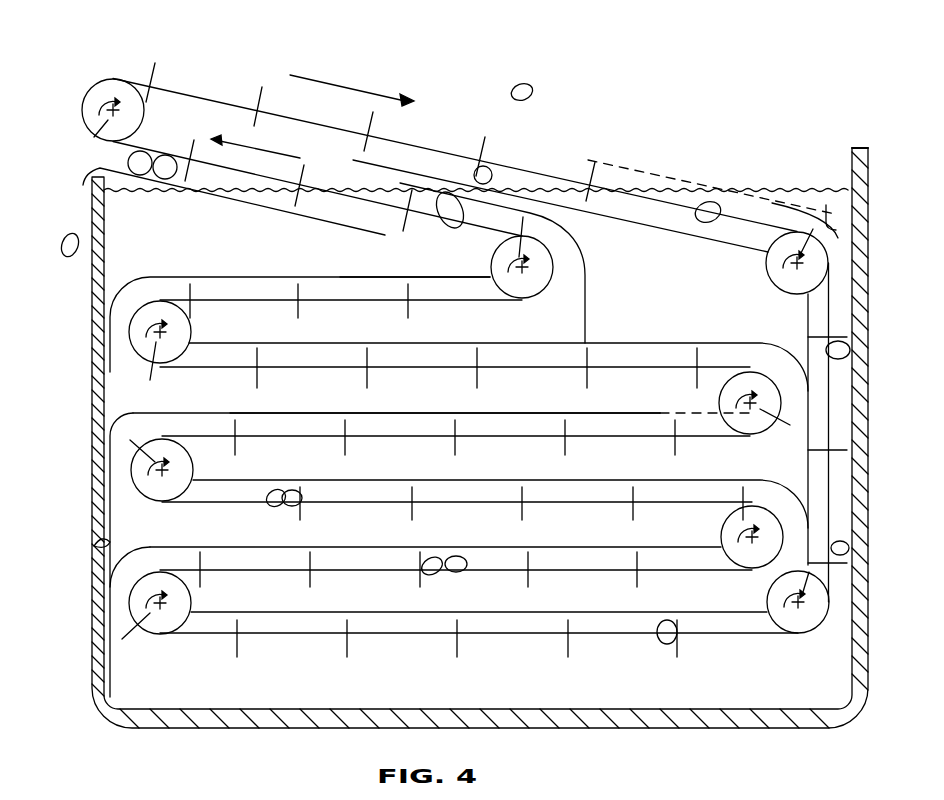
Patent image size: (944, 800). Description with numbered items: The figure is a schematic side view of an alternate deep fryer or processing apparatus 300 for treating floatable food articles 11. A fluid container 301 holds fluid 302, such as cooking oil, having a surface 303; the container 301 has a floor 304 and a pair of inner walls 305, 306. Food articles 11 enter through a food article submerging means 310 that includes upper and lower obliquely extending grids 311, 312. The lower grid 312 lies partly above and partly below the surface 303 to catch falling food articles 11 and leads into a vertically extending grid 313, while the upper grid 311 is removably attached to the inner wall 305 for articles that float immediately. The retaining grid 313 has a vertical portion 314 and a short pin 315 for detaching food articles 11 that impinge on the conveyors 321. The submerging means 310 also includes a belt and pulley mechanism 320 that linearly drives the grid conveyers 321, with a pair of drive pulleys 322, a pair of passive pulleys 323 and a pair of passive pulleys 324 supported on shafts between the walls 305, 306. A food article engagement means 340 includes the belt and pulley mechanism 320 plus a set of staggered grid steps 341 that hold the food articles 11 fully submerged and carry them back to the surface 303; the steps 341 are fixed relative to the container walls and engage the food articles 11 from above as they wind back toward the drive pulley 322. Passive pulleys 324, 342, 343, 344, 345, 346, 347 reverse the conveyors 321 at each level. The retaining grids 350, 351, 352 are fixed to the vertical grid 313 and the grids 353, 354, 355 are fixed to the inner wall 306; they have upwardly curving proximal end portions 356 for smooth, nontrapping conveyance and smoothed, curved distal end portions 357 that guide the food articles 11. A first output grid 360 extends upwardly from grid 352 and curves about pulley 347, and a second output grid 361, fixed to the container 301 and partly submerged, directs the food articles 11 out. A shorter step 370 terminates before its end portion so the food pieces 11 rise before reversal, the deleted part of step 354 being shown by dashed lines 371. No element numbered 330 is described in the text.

The food articles 11 is at (530, 90).
The processing apparatus 300 is at (475, 412).
The fluid container 301 is at (94, 346).
The fluid 302 is at (627, 682).
The surface 303 is at (850, 212).
The floor 304 is at (250, 708).
The inner wall 305 is at (850, 548).
The inner wall 306 is at (100, 540).
The food article submerging means 310 is at (617, 148).
The upper grid 311 is at (662, 160).
The lower grid 312 is at (353, 160).
The vertically extending grid 313 is at (845, 226).
The vertical portion 314 is at (826, 205).
The short pin 315 is at (788, 200).
The belt and pulley mechanism 320 is at (470, 364).
The grid conveyers 321 is at (262, 103).
The drive pulleys 322 is at (84, 102).
The passive pulleys 323 is at (766, 263).
The passive pulleys 324 is at (798, 634).
The endless belt 330 is at (160, 88).
The food article engagement means 340 is at (459, 457).
The staggered grid steps 341 is at (245, 277).
The passive pulley 342 is at (155, 634).
The passive pulley 343 is at (722, 535).
The passive pulley 344 is at (195, 462).
The passive pulley 345 is at (765, 436).
The passive pulley 346 is at (192, 327).
The passive pulley 347 is at (548, 298).
The retaining grid 350 is at (383, 636).
The retaining grid 351 is at (570, 480).
The retaining grid 352 is at (600, 343).
The retaining grid 353 is at (335, 547).
The retaining grid 354 is at (275, 413).
The retaining grid 355 is at (340, 277).
The proximal end portions 356 is at (135, 417).
The distal end portions 357 is at (152, 575).
The first output grid 360 is at (590, 265).
The second output grid 361 is at (243, 206).
The shorter grid 370 is at (624, 413).
The deleted portion 371 is at (693, 411).